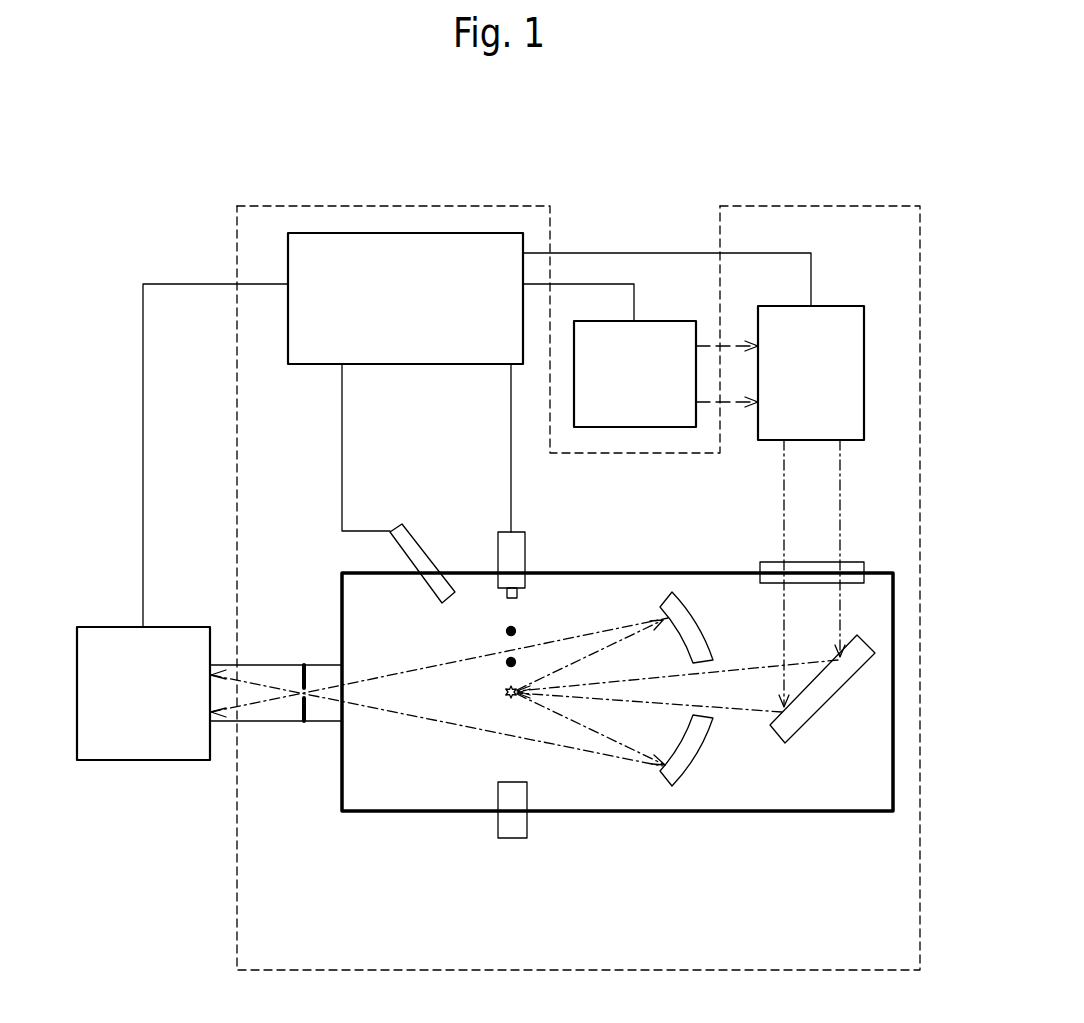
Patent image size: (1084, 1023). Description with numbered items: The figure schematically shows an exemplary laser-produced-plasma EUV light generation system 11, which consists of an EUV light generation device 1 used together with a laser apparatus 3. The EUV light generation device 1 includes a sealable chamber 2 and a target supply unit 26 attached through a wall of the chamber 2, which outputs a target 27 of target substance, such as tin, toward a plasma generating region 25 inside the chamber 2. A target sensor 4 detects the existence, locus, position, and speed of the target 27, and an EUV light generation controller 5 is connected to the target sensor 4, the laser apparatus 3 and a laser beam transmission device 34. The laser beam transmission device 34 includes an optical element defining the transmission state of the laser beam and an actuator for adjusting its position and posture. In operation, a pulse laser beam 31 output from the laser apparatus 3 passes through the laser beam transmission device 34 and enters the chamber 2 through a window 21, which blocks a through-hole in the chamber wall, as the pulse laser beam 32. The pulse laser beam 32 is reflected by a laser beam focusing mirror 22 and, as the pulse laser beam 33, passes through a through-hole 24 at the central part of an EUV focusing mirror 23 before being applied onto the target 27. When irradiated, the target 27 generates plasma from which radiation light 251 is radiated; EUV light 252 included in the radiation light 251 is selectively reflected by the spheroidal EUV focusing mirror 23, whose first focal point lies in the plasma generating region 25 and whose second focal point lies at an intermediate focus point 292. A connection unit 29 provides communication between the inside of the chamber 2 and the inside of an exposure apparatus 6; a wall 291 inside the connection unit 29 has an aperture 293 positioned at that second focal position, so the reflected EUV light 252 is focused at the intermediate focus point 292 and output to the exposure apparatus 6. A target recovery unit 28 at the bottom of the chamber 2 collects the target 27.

The EUV light generation device 1 is at (262, 205).
The EUV light generation system 11 is at (543, 152).
The chamber 2 is at (348, 572).
The laser apparatus 3 is at (673, 321).
The target sensor 4 is at (398, 524).
The EUV light generation controller 5 is at (288, 267).
The exposure apparatus 6 is at (178, 627).
The window 21 is at (777, 560).
The laser beam focusing mirror 22 is at (828, 700).
The EUV focusing mirror 23 is at (673, 778).
The through-hole 24 is at (723, 715).
The plasma generating region 25 is at (512, 700).
The radiation light 251 is at (590, 732).
The EUV light 252 is at (398, 718).
The target supply unit 26 is at (516, 531).
The target 27 is at (507, 628).
The target recovery unit 28 is at (510, 838).
The connection unit 29 is at (317, 722).
The wall 291 is at (296, 660).
The intermediate focus point 292 is at (298, 695).
The aperture 293 is at (295, 683).
The pulse laser beam 31 is at (728, 345).
The pulse laser beam 32 is at (840, 483).
The pulse laser beam 33 is at (613, 682).
The laser beam transmission device 34 is at (840, 306).